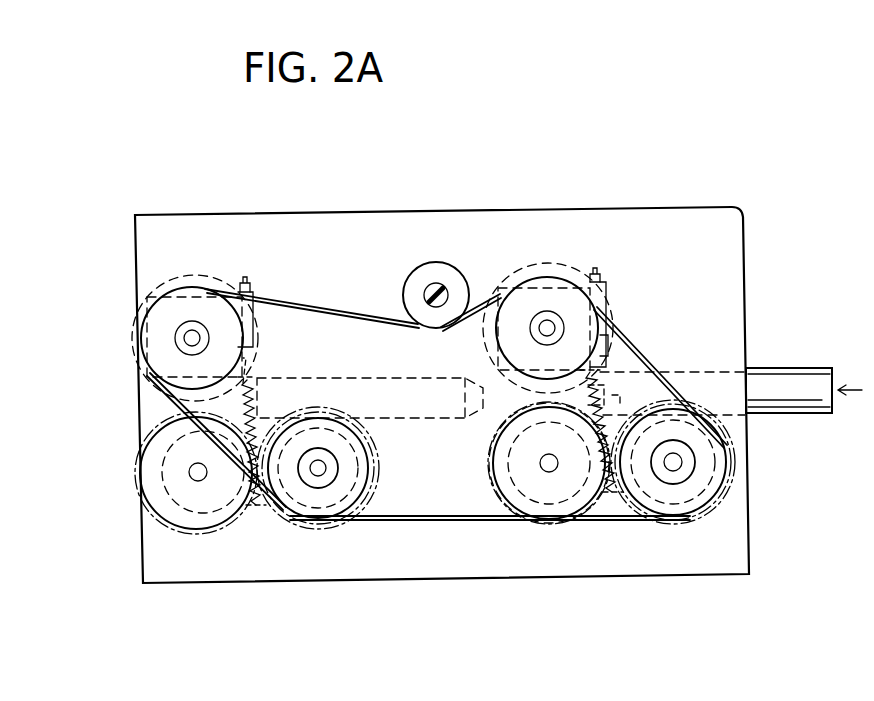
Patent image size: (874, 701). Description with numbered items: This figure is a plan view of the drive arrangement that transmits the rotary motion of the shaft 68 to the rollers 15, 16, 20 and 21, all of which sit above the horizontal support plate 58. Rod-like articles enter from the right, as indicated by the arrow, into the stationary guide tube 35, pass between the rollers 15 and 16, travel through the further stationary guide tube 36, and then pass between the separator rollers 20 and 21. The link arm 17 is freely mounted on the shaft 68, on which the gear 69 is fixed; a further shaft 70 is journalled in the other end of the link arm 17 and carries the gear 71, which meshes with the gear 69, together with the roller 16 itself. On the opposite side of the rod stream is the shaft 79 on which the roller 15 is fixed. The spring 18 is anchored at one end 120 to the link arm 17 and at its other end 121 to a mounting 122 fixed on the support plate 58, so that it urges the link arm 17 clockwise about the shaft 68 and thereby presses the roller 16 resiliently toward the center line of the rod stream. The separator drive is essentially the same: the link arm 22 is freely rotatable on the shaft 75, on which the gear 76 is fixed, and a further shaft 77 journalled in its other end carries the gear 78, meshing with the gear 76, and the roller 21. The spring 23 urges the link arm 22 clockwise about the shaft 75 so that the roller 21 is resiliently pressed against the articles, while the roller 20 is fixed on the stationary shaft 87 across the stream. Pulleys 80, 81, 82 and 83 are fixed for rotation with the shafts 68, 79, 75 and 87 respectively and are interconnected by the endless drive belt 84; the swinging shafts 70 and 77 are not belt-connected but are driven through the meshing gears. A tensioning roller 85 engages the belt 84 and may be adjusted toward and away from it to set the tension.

The horizontal support plate 58 is at (745, 220).
The separator roller 20 is at (185, 272).
The pulley 83 is at (195, 292).
The shaft 87 is at (194, 336).
The endless drive belt 84 is at (330, 312).
The tensioning roller 85 is at (445, 266).
The roller 15 is at (552, 264).
The shaft 79 is at (545, 326).
The pulley 81 is at (592, 305).
The mounting 122 is at (606, 286).
The other end of spring 121 is at (606, 342).
The spring 23 is at (250, 382).
The stationary guide tube 36 is at (402, 378).
The spring 18 is at (600, 386).
The one end of spring 120 is at (586, 424).
The stationary guide tube 35 is at (780, 368).
The gear 78 is at (214, 534).
The separator roller 21 is at (197, 534).
The shaft 77 is at (203, 476).
The pulley 82 is at (310, 516).
The shaft 75 is at (316, 467).
The link arm 22 is at (378, 445).
The gear 76 is at (345, 526).
The gear 71 is at (525, 525).
The roller 16 is at (490, 443).
The link arm 17 is at (508, 470).
The shaft 70 is at (554, 467).
The shaft 68 is at (670, 466).
The pulley 80 is at (728, 461).
The gear 69 is at (683, 524).